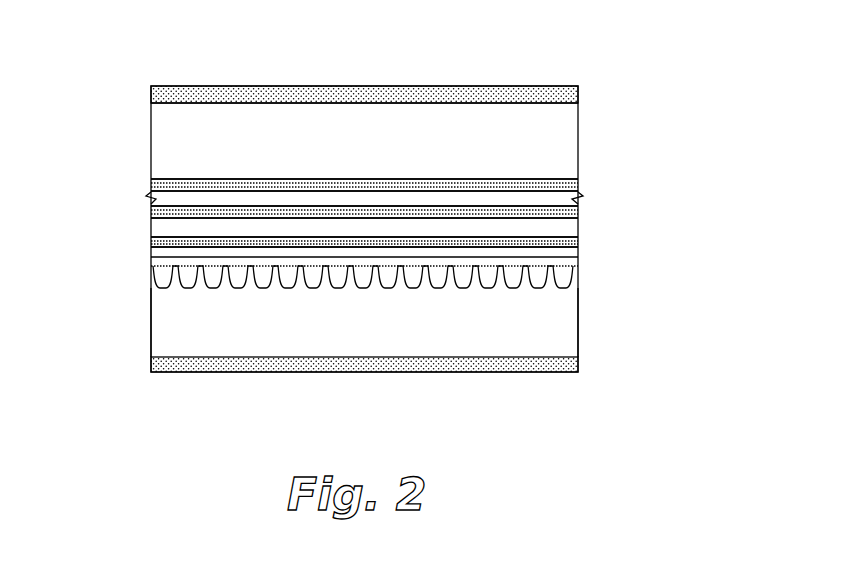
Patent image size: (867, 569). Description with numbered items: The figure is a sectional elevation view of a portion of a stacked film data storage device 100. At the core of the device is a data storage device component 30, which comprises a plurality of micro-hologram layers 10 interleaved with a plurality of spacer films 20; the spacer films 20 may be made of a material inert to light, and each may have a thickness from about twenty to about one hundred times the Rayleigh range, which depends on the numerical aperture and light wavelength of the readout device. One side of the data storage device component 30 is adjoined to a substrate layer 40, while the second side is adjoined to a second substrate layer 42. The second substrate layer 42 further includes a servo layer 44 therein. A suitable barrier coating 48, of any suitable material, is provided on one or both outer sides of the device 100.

The data storage device 100 is at (592, 37).
The micro-hologram layer 10 is at (580, 182).
The spacer film 20 is at (580, 207).
The data storage device component 30 is at (384, 216).
The substrate layer 40 is at (136, 139).
The second substrate layer 42 is at (138, 316).
The servo layer 44 is at (597, 280).
The barrier coating 48 is at (579, 93).